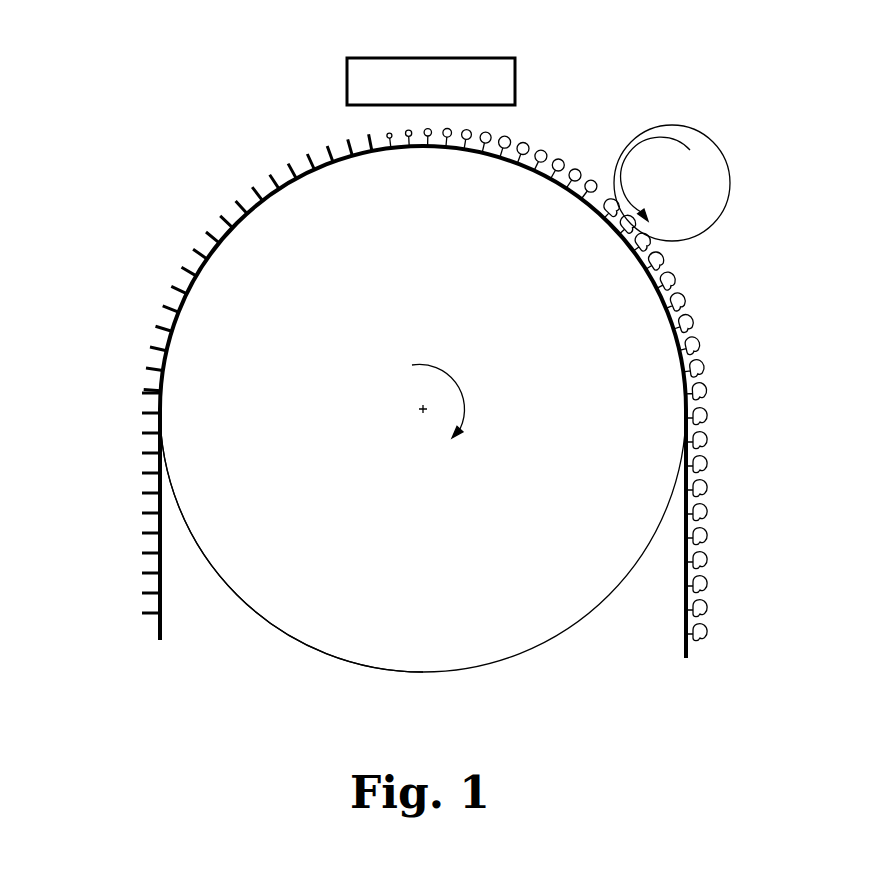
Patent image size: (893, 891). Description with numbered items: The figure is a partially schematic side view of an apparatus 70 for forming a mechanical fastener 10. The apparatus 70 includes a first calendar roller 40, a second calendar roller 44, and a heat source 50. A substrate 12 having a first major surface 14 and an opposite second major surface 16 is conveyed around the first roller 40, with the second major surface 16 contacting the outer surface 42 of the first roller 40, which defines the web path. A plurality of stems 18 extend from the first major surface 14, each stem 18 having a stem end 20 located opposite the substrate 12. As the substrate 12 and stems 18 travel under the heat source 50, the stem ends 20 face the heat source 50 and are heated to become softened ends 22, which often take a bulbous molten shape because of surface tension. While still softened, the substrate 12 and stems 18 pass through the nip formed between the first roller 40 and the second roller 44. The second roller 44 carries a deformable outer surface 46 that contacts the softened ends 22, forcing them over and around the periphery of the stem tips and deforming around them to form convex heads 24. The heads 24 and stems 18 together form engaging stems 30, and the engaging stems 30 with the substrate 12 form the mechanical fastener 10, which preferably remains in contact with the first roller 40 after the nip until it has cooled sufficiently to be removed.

The mechanical fastener 10 is at (747, 524).
The substrate 12 is at (150, 630).
The first major surface 14 is at (158, 523).
The second major surface 16 is at (160, 503).
The stems 18 is at (170, 313).
The stem end 20 is at (233, 205).
The softened ends 22 is at (546, 157).
The convex heads 24 is at (681, 290).
The engaging stems 30 is at (720, 369).
The first calendar roller 40 is at (382, 663).
The outer surface 42 is at (242, 602).
The second calendar roller 44 is at (703, 178).
The deformable outer surface 46 is at (628, 152).
The heat source 50 is at (460, 72).
The apparatus 70 is at (226, 120).